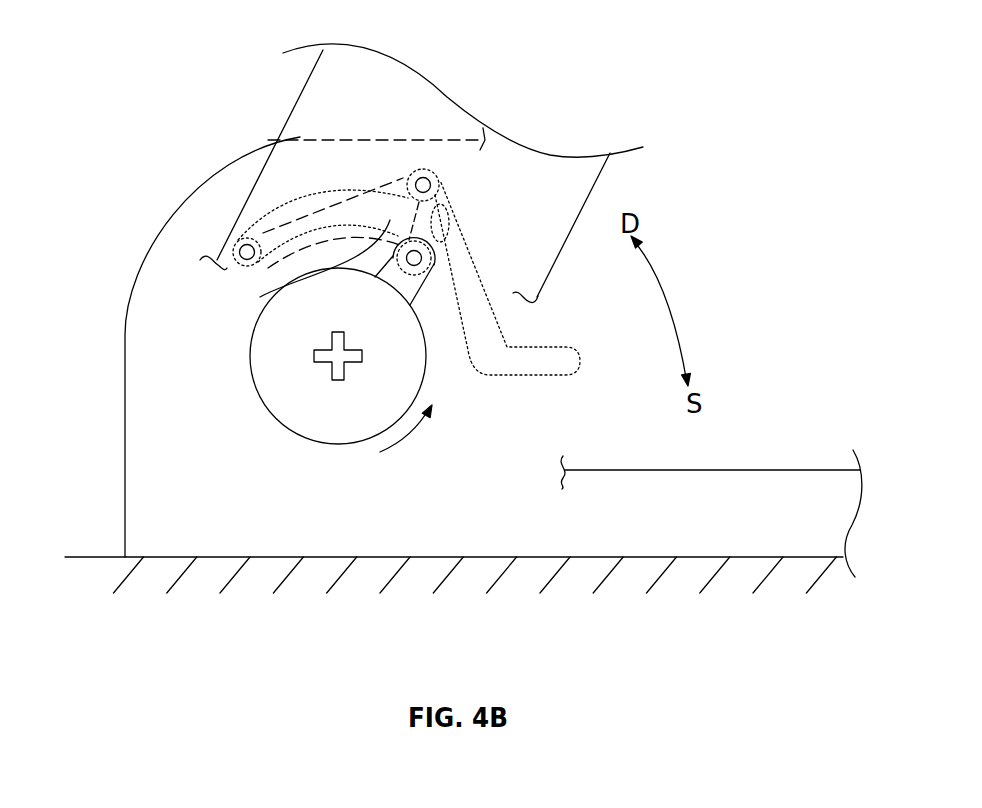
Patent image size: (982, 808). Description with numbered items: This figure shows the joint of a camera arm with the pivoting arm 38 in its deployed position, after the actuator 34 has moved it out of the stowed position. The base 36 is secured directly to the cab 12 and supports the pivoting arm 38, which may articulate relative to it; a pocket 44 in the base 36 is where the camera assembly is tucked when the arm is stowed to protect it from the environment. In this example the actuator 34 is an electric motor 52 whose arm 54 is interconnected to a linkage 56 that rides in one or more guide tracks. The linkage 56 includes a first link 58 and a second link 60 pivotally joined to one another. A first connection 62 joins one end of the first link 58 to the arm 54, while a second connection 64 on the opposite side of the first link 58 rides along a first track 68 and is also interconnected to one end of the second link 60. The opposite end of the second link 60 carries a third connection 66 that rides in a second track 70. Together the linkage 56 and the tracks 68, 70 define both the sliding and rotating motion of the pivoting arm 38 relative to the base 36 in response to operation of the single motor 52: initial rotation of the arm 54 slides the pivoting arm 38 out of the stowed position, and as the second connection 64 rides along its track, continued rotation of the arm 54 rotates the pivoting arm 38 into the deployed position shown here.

The cab 12 is at (108, 557).
The actuator 34 is at (260, 437).
The base 36 is at (400, 533).
The pivoting arm 38 is at (448, 105).
The pocket 44 is at (768, 470).
The electric motor 52 is at (262, 352).
The arm 54 is at (415, 290).
The linkage 56 is at (414, 160).
The first link 58 is at (435, 210).
The second link 60 is at (388, 186).
The first connection 62 is at (414, 260).
The second connection 64 is at (436, 172).
The third connection 66 is at (245, 242).
The first track 68 is at (505, 363).
The second track 70 is at (280, 294).